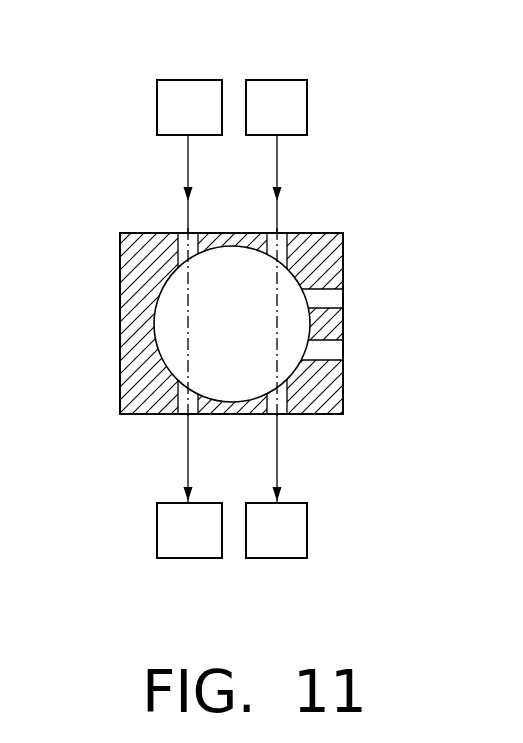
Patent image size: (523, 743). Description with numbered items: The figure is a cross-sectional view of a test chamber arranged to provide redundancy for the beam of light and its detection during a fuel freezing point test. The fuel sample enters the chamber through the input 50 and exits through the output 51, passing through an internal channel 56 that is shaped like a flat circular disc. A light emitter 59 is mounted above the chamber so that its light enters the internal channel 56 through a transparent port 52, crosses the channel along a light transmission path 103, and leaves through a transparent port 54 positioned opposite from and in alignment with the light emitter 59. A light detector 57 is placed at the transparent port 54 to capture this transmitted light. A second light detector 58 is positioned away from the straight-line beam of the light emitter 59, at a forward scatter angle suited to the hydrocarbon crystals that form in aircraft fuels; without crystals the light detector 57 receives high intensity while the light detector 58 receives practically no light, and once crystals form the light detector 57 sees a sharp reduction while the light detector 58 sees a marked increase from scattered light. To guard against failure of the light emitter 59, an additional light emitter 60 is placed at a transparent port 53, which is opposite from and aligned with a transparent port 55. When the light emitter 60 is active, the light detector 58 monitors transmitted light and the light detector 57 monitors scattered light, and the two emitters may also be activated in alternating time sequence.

The input 50 is at (345, 298).
The output 51 is at (345, 350).
The transparent port 52 is at (183, 232).
The transparent port 53 is at (283, 232).
The transparent port 54 is at (183, 415).
The transparent port 55 is at (282, 415).
The internal channel 56 is at (245, 368).
The light detector 57 is at (190, 558).
The second light detector 58 is at (278, 558).
The light emitter 59 is at (189, 80).
The light emitter 60 is at (277, 80).
The light transmission path 103 is at (274, 296).